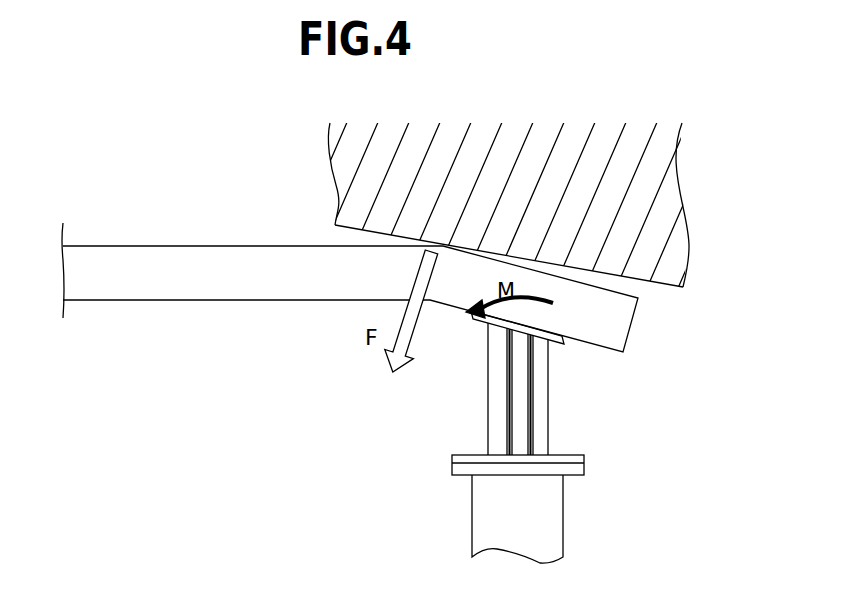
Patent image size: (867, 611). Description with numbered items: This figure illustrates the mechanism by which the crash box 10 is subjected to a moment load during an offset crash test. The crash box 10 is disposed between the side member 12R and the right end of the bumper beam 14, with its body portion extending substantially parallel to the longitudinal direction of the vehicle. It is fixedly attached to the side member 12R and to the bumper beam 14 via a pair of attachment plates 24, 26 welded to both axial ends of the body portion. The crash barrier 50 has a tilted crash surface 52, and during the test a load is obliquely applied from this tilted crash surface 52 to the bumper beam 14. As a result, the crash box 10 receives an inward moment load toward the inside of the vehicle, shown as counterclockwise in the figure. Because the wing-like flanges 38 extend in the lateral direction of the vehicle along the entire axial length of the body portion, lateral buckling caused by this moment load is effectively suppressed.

The crash box 10 is at (350, 381).
The side member 12R is at (547, 520).
The bumper beam 14 is at (165, 258).
The attachment plate 24 is at (573, 456).
The attachment plate 26 is at (553, 343).
The wing-like flange 38 is at (497, 393).
The crash barrier 50 is at (496, 205).
The tilted crash surface 52 is at (663, 286).